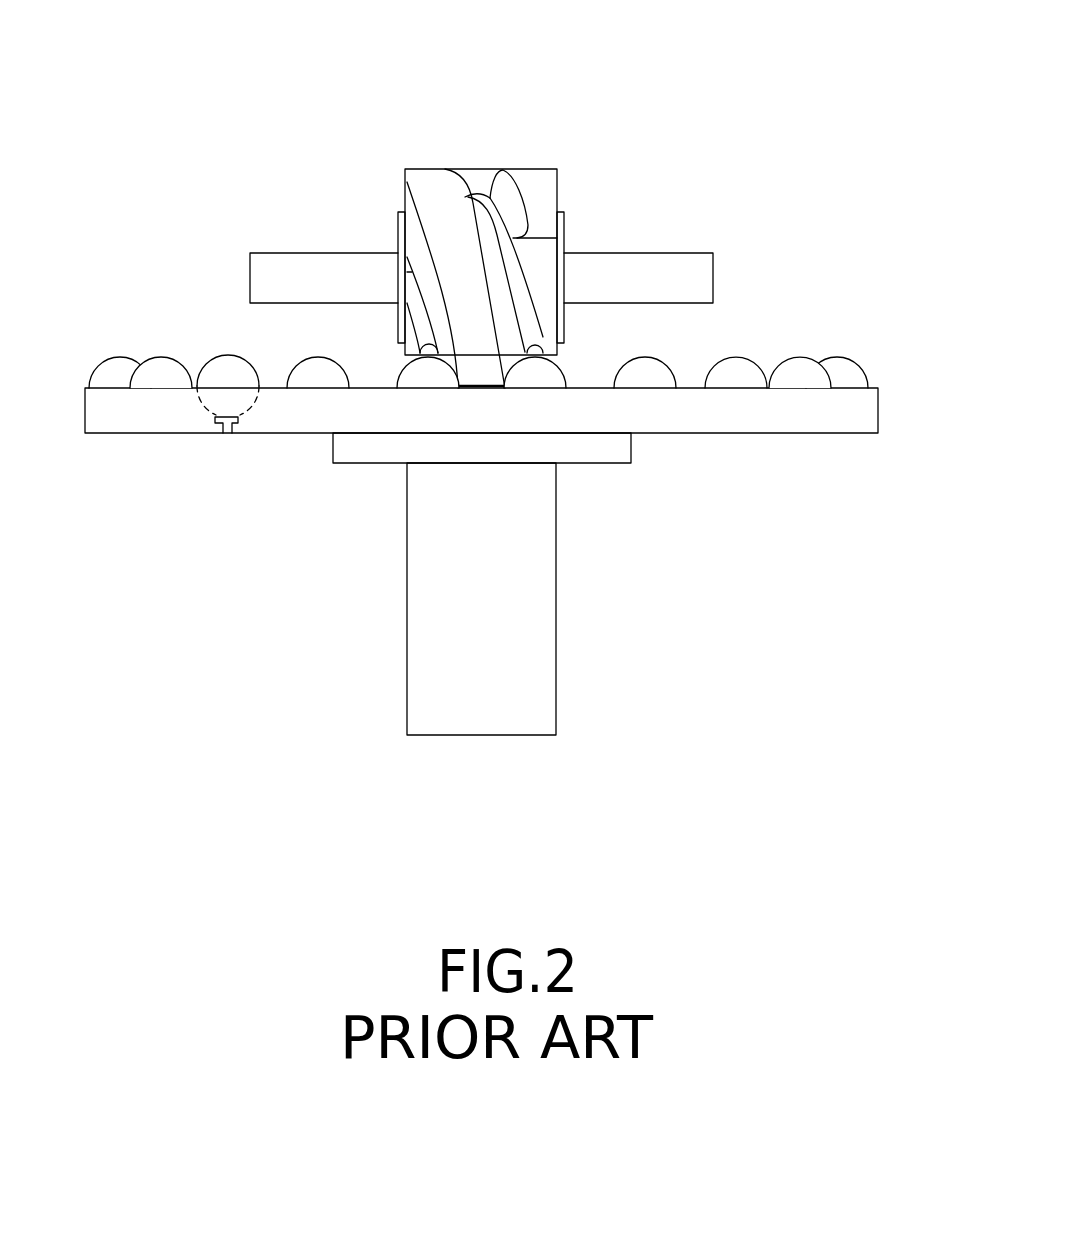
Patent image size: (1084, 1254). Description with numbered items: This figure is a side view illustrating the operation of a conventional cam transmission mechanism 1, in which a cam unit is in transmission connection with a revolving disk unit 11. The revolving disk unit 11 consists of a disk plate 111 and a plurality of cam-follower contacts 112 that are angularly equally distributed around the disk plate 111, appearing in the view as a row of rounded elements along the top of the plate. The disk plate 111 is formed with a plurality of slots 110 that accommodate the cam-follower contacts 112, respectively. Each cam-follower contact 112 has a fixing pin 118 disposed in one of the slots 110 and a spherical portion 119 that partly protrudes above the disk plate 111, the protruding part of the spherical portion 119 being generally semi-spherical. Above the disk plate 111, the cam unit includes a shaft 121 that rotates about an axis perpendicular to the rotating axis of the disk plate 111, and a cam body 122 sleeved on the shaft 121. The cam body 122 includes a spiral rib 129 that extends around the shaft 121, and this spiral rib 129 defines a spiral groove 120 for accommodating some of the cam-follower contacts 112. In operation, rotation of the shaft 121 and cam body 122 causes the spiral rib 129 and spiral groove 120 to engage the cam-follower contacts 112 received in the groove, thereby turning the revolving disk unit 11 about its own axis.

The cam transmission mechanism 1 is at (454, 197).
The revolving disk unit 11 is at (500, 476).
The slots 110 is at (205, 425).
The disk plate 111 is at (755, 425).
The cam-follower contacts 112 is at (213, 371).
The fixing pin 118 is at (218, 430).
The spherical portion 119 is at (235, 395).
The spiral groove 120 is at (475, 188).
The shaft 121 is at (656, 272).
The cam body 122 is at (505, 197).
The spiral rib 129 is at (538, 178).